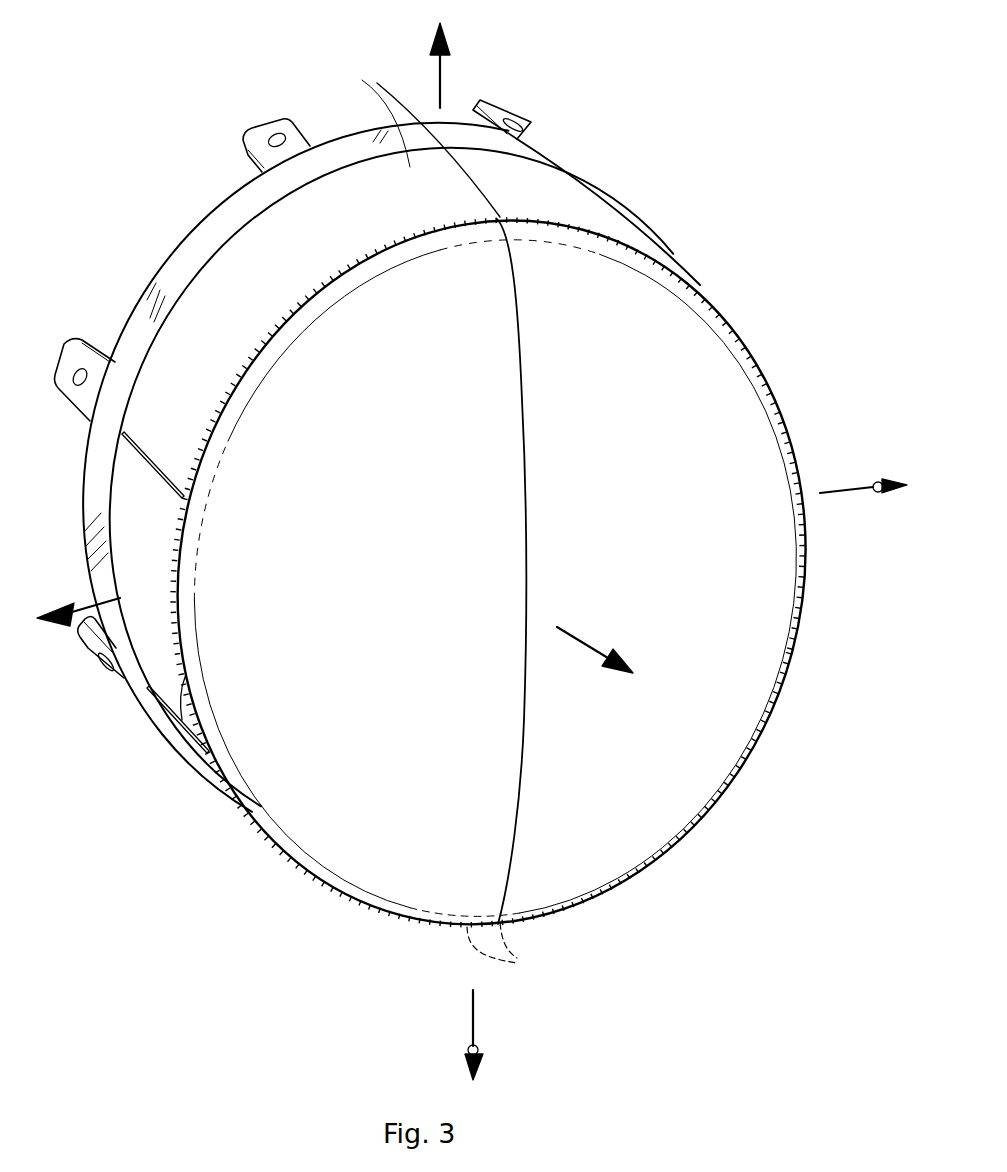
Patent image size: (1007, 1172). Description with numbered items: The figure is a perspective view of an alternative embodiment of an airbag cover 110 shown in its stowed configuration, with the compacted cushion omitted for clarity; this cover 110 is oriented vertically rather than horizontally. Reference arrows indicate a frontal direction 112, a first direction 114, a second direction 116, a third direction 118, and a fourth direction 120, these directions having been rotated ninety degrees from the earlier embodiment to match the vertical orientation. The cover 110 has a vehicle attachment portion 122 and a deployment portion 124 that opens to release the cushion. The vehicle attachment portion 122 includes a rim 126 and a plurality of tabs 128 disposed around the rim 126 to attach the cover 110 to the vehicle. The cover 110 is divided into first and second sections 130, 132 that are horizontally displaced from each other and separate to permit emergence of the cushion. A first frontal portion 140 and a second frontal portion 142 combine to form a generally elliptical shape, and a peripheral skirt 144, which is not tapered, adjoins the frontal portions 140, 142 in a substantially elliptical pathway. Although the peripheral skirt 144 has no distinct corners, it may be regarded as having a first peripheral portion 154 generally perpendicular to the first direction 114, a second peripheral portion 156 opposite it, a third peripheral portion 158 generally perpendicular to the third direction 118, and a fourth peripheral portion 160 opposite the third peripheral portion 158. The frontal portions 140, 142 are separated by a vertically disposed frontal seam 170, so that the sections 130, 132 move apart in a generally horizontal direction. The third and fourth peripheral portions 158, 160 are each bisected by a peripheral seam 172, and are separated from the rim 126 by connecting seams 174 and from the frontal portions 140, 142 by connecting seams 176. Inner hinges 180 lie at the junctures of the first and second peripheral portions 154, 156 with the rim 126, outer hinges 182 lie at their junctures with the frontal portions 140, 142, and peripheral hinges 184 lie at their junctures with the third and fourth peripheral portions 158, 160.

The cover 110 is at (468, 550).
The frontal direction 112 is at (583, 640).
The first direction 114 is at (83, 608).
The second direction 116 is at (857, 493).
The third direction 118 is at (437, 72).
The fourth direction 120 is at (473, 1023).
The vehicle attachment portion 122 is at (568, 172).
The deployment portion 124 is at (693, 278).
The rim 126 is at (180, 258).
The tabs 128 is at (264, 126).
The first section 130 is at (327, 143).
The second section 132 is at (468, 125).
The first frontal portion 140 is at (343, 337).
The second frontal portion 142 is at (567, 293).
The peripheral skirt 144 is at (647, 232).
The first peripheral portion 154 is at (107, 500).
The second peripheral portion 156 is at (793, 440).
The third peripheral portion 158 is at (367, 115).
The fourth peripheral portion 160 is at (520, 963).
The frontal seam 170 is at (526, 495).
The peripheral seam 172 is at (453, 180).
The connecting seams 174 is at (503, 160).
The connecting seams 176 is at (277, 347).
The inner hinges 180 is at (115, 457).
The outer hinges 182 is at (183, 627).
The peripheral hinges 184 is at (160, 467).